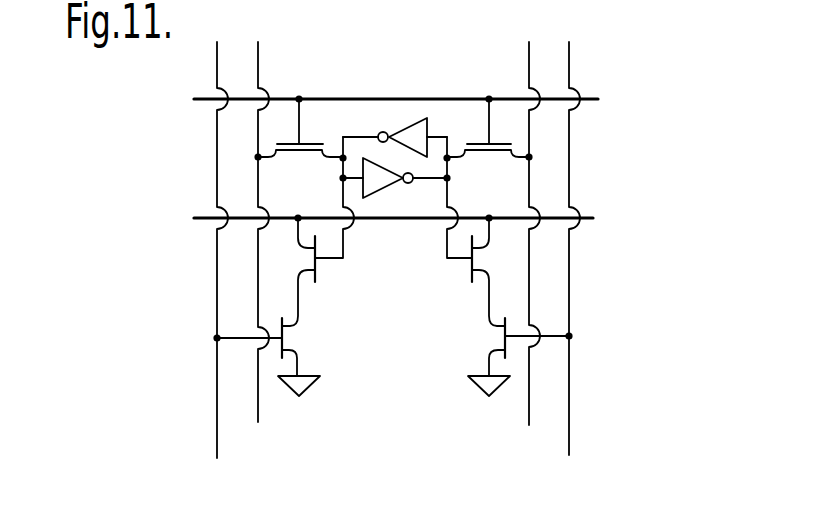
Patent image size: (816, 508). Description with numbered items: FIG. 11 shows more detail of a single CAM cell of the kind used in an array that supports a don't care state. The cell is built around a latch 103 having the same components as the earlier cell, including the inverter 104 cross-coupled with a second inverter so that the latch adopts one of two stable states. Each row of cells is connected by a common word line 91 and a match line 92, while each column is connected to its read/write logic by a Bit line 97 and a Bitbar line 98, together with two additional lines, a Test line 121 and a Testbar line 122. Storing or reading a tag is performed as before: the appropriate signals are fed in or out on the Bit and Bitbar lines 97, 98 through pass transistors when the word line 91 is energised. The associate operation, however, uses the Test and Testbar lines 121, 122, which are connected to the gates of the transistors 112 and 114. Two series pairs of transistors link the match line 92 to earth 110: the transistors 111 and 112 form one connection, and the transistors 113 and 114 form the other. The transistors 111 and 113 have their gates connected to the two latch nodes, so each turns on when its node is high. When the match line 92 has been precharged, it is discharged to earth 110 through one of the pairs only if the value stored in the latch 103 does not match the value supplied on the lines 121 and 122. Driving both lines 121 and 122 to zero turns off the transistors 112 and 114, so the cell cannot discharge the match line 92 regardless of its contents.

The word line 91 is at (312, 98).
The match line 92 is at (592, 220).
The Bit line 97 is at (257, 378).
The Bitbar line 98 is at (528, 62).
The latch 103 is at (393, 74).
The inverter 104 is at (410, 129).
The earth 110 is at (302, 394).
The transistor 111 is at (466, 265).
The transistor 112 is at (503, 343).
The transistor 113 is at (319, 268).
The transistor 114 is at (288, 328).
The Test line 121 is at (570, 162).
The Testbar line 122 is at (217, 288).